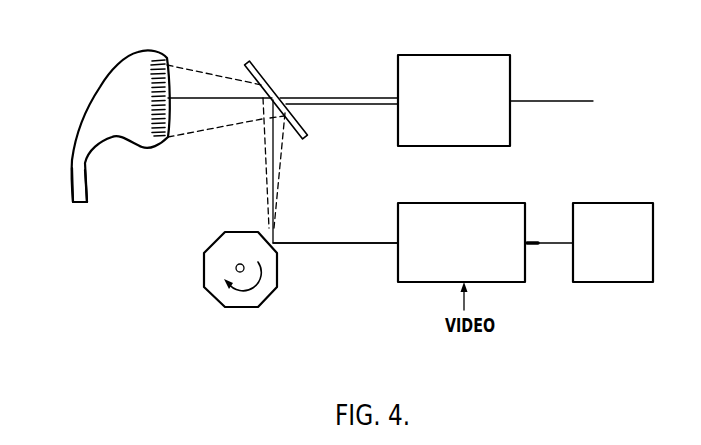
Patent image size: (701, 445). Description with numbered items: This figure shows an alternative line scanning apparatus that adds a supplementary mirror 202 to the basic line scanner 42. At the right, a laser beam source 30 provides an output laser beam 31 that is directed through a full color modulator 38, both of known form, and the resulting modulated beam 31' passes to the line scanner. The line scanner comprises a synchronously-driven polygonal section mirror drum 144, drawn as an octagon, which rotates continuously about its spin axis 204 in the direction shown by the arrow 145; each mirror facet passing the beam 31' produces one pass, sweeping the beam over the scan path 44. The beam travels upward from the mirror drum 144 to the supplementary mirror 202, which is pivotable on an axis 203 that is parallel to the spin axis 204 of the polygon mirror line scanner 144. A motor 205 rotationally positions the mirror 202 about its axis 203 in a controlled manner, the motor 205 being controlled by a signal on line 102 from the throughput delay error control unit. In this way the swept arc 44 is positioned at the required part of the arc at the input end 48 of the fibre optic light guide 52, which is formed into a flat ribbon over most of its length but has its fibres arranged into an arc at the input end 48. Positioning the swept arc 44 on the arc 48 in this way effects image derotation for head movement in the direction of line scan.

The input end 48 is at (168, 63).
The scan path 44 is at (210, 75).
The fibre optic light guide 52 is at (74, 173).
The line scanner 42 is at (192, 207).
The supplementary mirror 202 is at (268, 82).
The axis 203 is at (321, 97).
The motor 205 is at (455, 62).
The line 102 is at (558, 100).
The polygonal section mirror drum 144 is at (270, 275).
The spin axis 204 is at (236, 267).
The arrow 145 is at (236, 288).
The modulated beam 31' is at (335, 218).
The full color modulator 38 is at (455, 210).
The output laser beam 31 is at (549, 226).
The laser beam source 30 is at (614, 210).